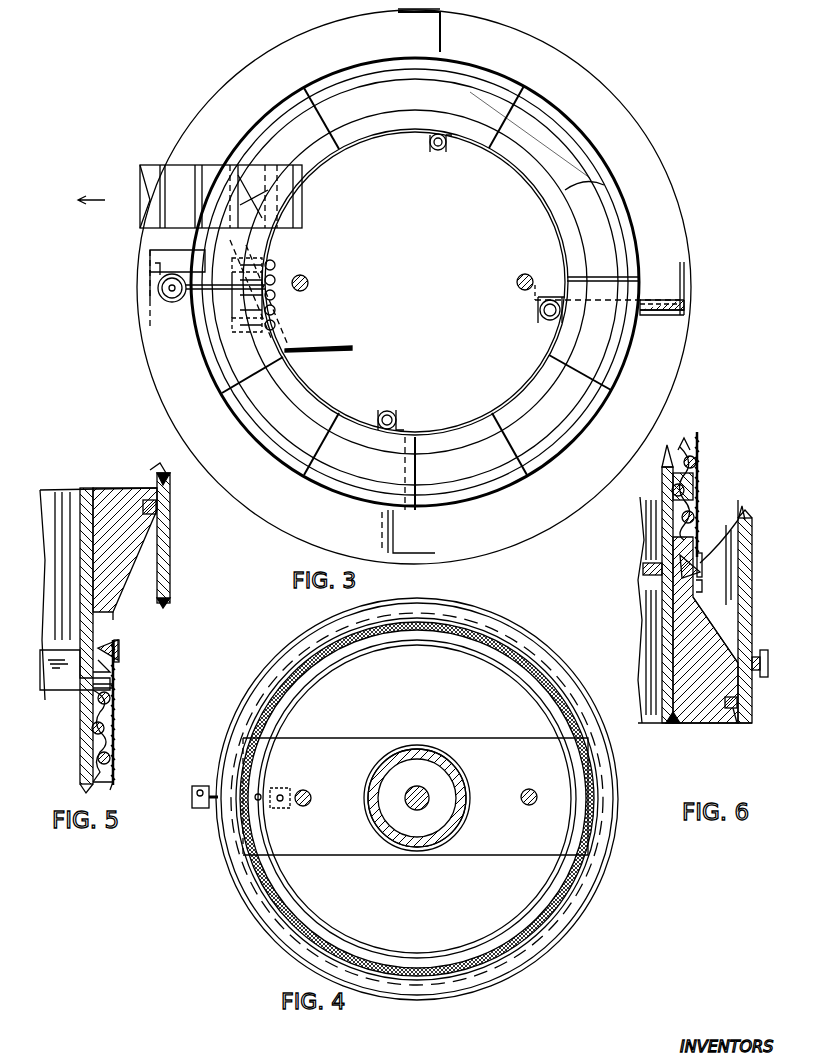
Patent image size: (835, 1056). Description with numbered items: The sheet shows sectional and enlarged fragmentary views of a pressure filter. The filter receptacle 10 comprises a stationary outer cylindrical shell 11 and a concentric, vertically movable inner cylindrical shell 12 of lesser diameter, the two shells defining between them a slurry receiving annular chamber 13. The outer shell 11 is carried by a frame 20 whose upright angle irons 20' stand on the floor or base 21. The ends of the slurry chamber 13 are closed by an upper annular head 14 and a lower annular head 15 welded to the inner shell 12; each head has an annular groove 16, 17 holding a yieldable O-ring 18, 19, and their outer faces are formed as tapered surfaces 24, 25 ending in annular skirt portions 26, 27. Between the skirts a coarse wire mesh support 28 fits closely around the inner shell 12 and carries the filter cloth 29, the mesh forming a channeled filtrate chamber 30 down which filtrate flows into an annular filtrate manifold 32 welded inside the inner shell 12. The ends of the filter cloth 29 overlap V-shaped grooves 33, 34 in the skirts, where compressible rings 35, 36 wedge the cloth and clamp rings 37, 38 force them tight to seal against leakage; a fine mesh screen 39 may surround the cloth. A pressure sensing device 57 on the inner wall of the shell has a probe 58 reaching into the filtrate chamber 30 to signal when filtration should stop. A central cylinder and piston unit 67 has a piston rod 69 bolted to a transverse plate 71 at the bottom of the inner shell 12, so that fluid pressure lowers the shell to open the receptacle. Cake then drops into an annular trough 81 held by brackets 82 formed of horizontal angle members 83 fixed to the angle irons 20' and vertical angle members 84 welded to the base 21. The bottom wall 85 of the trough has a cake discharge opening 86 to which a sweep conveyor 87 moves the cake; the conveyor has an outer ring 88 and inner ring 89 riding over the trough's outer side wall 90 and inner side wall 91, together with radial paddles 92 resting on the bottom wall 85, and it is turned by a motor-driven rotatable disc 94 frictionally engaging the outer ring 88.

In FIG. 4, the filter receptacle 10 is at (248, 926).
In FIG. 4, the outer cylindrical shell 11 is at (600, 866).
In FIG. 5, the outer cylindrical shell 11 is at (86, 768).
In FIG. 6, the outer cylindrical shell 11 is at (754, 641).
In FIG. 4, the inner cylindrical shell 12 is at (563, 882).
In FIG. 5, the inner cylindrical shell 12 is at (171, 578).
In FIG. 6, the inner cylindrical shell 12 is at (662, 642).
In FIG. 4, the slurry receiving annular chamber 13 is at (517, 952).
In FIG. 5, the slurry receiving annular chamber 13 is at (163, 601).
In FIG. 6, the slurry receiving annular chamber 13 is at (728, 548).
In FIG. 5, the upper annular head 14 is at (113, 487).
In FIG. 6, the lower annular head 15 is at (708, 724).
In FIG. 5, the annular groove 16 is at (153, 493).
In FIG. 6, the annular groove 17 is at (737, 712).
In FIG. 5, the O-ring 18 is at (158, 508).
In FIG. 6, the O-ring 19 is at (740, 700).
In FIG. 3, the frame 20 is at (654, 272).
In FIG. 3, the upright angle irons 20' is at (405, 281).
In FIG. 3, the floor or base 21 is at (678, 341).
In FIG. 5, the tapered surface 24 is at (143, 560).
In FIG. 6, the tapered surface 25 is at (716, 630).
In FIG. 5, the annular skirt portion 26 is at (114, 616).
In FIG. 6, the annular skirt portion 27 is at (700, 590).
In FIG. 4, the coarse wire mesh support 28 is at (465, 967).
In FIG. 5, the coarse wire mesh support 28 is at (99, 733).
In FIG. 6, the coarse wire mesh support 28 is at (698, 453).
In FIG. 5, the filter cloth 29 is at (114, 768).
In FIG. 6, the filter cloth 29 is at (700, 586).
In FIG. 5, the filtrate chamber 30 is at (115, 742).
In FIG. 6, the filtrate chamber 30 is at (700, 470).
In FIG. 4, the annular filtrate manifold 32 is at (523, 905).
In FIG. 5, the V-shaped groove 33 is at (110, 672).
In FIG. 6, the V-shaped groove 34 is at (688, 573).
In FIG. 5, the compressible ring 35 is at (119, 652).
In FIG. 6, the compressible ring 36 is at (690, 572).
In FIG. 5, the clamp ring 37 is at (120, 658).
In FIG. 6, the clamp ring 38 is at (739, 517).
In FIG. 5, the fine mesh screen 39 is at (114, 712).
In FIG. 6, the fine mesh screen 39 is at (698, 447).
In FIG. 5, the pressure sensing device 57 is at (40, 682).
In FIG. 5, the probe 58 is at (113, 690).
In FIG. 4, the cylinder and piston unit 67 is at (422, 748).
In FIG. 4, the piston rod 69 is at (414, 808).
In FIG. 4, the transverse plate 71 is at (336, 738).
In FIG. 3, the annular trough 81 is at (610, 236).
In FIG. 3, the brackets 82 is at (538, 315).
In FIG. 3, the angle members 83 is at (668, 318).
In FIG. 3, the vertical angle members 84 is at (534, 290).
In FIG. 3, the bottom wall 85 is at (278, 145).
In FIG. 3, the cake discharge opening 86 is at (236, 215).
In FIG. 3, the sweep conveyor 87 is at (592, 178).
In FIG. 3, the outer ring 88 is at (568, 111).
In FIG. 3, the inner ring 89 is at (524, 178).
In FIG. 3, the outer side wall 90 is at (531, 106).
In FIG. 3, the inner side wall 91 is at (514, 144).
In FIG. 3, the paddles 92 is at (584, 186).
In FIG. 3, the rotatable disc 94 is at (172, 304).